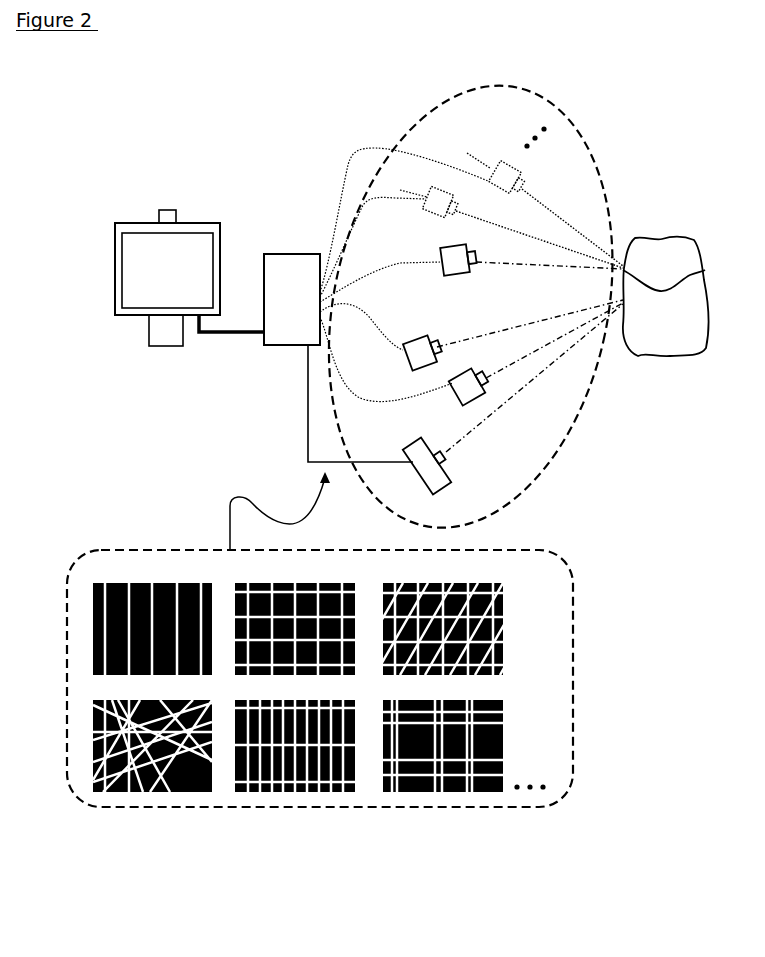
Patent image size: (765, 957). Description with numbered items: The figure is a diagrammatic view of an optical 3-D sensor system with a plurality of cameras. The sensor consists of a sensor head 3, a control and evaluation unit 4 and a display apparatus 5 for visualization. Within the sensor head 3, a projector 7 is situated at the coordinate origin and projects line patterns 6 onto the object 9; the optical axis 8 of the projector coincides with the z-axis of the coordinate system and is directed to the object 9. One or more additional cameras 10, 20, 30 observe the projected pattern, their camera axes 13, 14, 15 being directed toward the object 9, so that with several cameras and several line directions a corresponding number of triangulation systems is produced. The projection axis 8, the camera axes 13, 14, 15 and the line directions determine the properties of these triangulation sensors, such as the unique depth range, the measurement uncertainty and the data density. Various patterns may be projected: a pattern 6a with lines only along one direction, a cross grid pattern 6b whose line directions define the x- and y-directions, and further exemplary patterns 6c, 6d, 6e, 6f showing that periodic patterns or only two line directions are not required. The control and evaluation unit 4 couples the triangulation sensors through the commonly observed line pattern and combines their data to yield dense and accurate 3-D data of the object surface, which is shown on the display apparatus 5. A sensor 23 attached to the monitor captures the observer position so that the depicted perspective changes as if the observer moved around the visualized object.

The sensor head 3 is at (488, 88).
The control and evaluation unit 4 is at (343, 305).
The display apparatus 5 is at (167, 284).
The line patterns 6 is at (320, 639).
The pattern with lines along one direction 6a is at (152, 621).
The cross grid pattern 6b is at (295, 621).
The pattern 6c is at (451, 621).
The pattern 6d is at (152, 739).
The pattern 6e is at (295, 739).
The pattern 6f is at (443, 739).
The projector 7 is at (444, 486).
The optical axis of the projector 8 is at (415, 478).
The object 9 is at (666, 285).
The camera 10 is at (470, 393).
The camera axis 13 is at (451, 397).
The camera axis 14 is at (405, 357).
The camera axis 15 is at (440, 260).
The camera 20 is at (424, 346).
The sensor for capturing the observer position 23 is at (167, 209).
The camera 30 is at (459, 268).